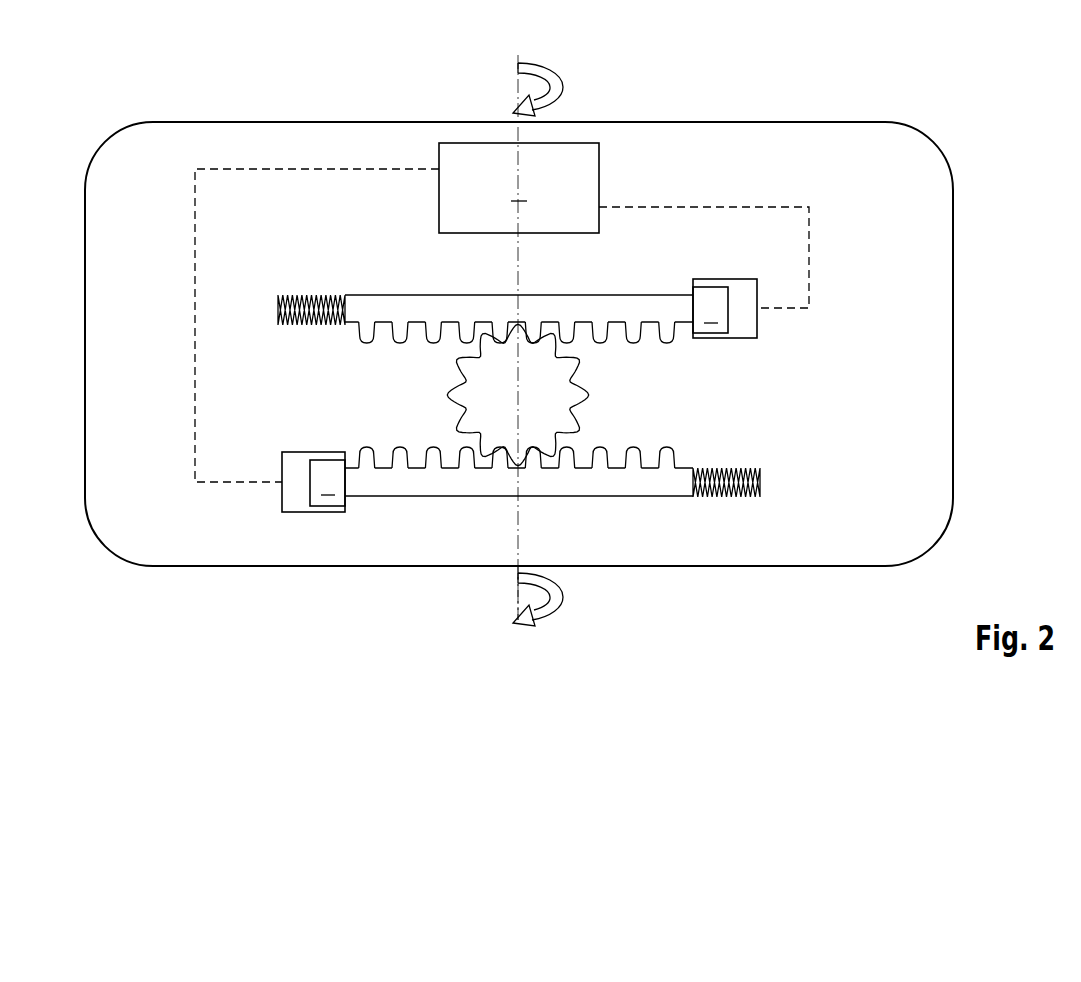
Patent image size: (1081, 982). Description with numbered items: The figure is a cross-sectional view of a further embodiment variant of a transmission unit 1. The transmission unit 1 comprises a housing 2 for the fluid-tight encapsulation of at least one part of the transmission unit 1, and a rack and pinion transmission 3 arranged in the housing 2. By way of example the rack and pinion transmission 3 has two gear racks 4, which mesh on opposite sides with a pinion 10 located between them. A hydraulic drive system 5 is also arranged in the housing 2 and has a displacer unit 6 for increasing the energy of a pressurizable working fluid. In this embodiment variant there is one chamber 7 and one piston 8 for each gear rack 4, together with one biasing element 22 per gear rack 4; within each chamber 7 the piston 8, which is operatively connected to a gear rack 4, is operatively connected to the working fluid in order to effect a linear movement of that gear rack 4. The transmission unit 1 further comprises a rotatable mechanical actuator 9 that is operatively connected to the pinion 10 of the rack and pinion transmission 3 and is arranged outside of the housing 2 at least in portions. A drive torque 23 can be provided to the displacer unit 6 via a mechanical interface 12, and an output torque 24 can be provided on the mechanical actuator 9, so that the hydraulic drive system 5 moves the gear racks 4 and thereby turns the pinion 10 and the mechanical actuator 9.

The transmission unit 1 is at (904, 100).
The housing 2 is at (931, 137).
The rack and pinion transmission 3 is at (640, 396).
The gear rack 4 is at (603, 306).
The hydraulic drive system 5 is at (626, 138).
The displacer unit 6 is at (519, 188).
The chamber 7 is at (727, 279).
The piston 8 is at (519, 396).
The mechanical actuator 9 is at (518, 597).
The pinion 10 is at (448, 395).
The mechanical interface 12 is at (518, 84).
The biasing element 22 is at (314, 295).
The drive torque 23 is at (563, 86).
The output torque 24 is at (560, 598).